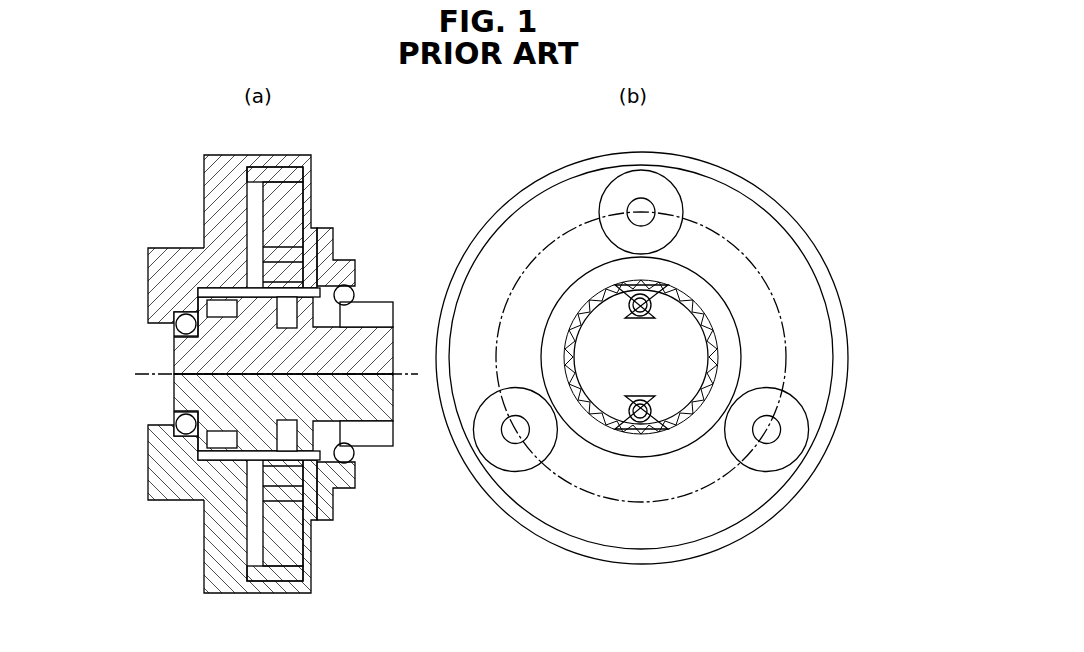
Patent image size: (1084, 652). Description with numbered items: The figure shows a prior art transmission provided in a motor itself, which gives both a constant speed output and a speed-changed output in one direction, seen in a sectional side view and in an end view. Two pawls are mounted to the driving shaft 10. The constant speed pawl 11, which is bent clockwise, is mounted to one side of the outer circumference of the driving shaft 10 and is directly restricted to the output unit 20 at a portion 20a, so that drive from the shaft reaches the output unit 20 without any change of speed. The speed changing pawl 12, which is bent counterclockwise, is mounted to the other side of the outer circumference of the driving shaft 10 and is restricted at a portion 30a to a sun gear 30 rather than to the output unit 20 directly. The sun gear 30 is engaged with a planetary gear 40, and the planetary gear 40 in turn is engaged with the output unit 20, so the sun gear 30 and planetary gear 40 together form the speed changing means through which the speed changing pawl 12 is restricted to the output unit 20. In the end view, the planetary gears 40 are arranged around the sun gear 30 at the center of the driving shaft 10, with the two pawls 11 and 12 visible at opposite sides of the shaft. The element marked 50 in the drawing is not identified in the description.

The driving shaft 10 is at (383, 400).
The constant speed pawl 11 is at (627, 437).
The speed changing pawl 12 is at (287, 322).
The output unit 20 is at (207, 192).
The portion 20a is at (193, 297).
The sun gear 30 is at (745, 358).
The portion 30a is at (341, 292).
The planetary gear 40 is at (312, 215).
The nut 50 is at (353, 267).